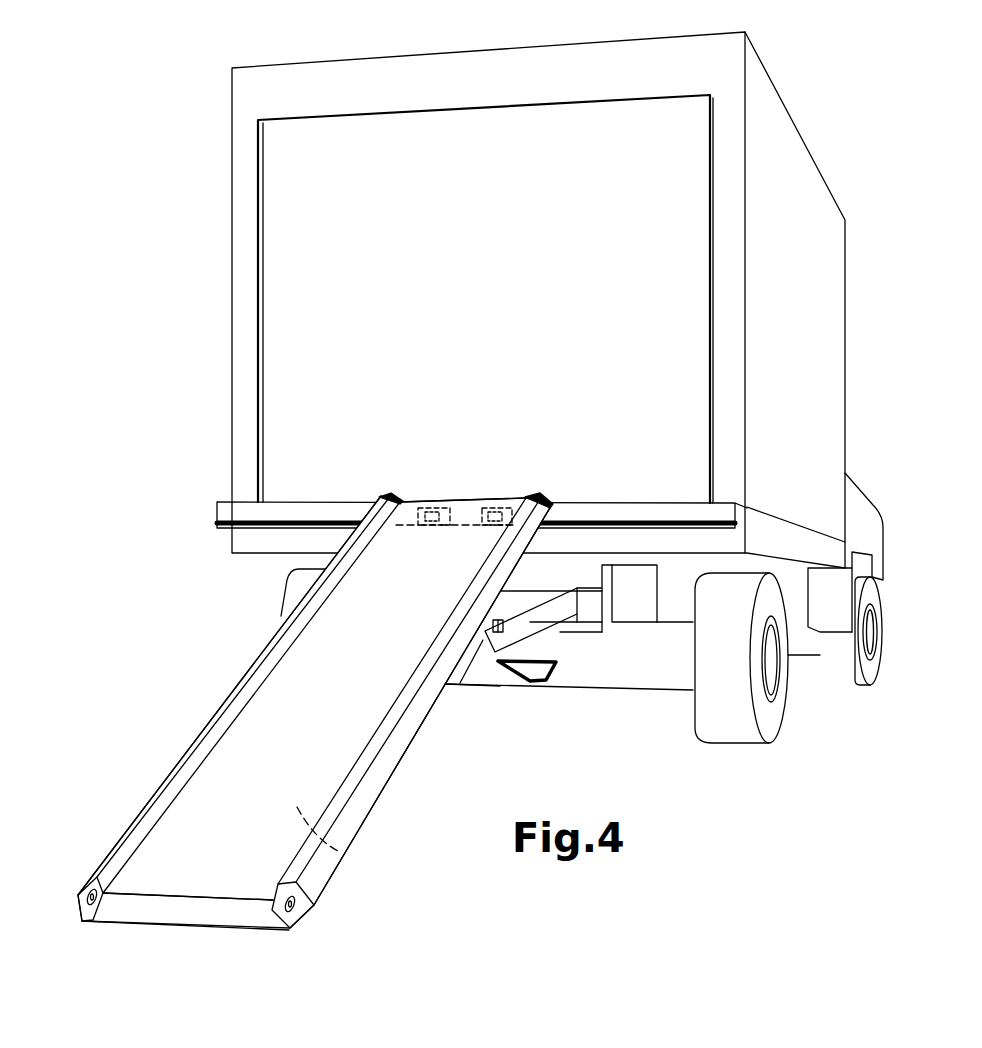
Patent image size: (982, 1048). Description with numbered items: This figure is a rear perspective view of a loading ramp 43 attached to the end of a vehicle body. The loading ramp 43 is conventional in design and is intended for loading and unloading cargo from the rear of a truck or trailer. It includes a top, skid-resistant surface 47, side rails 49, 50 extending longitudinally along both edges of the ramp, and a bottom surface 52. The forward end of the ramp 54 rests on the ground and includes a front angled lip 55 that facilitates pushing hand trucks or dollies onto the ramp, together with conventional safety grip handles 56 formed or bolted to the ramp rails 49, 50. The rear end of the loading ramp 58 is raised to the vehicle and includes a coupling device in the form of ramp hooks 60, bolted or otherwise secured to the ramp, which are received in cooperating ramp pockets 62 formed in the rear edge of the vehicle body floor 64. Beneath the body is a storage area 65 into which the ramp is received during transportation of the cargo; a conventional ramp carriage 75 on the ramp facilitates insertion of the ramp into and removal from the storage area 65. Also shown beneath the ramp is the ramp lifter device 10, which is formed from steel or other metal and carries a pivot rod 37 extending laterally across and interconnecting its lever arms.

The ramp lifter device 10 is at (570, 667).
The pivot rod 37 is at (505, 638).
The loading ramp 43 is at (454, 736).
The top skid-resistant surface 47 is at (307, 751).
The side rail 49 is at (233, 693).
The side rail 50 is at (367, 757).
The bottom surface 52 is at (340, 852).
The forward end of the ramp 54 is at (157, 930).
The front angled lip 55 is at (196, 912).
The safety grip handle 56 is at (78, 897).
The rear end of the loading ramp 58 is at (478, 500).
The ramp hook 60 is at (430, 503).
The ramp pocket 62 is at (462, 503).
The vehicle body floor 64 is at (666, 500).
The storage area 65 is at (541, 583).
The ramp carriage 75 is at (488, 678).